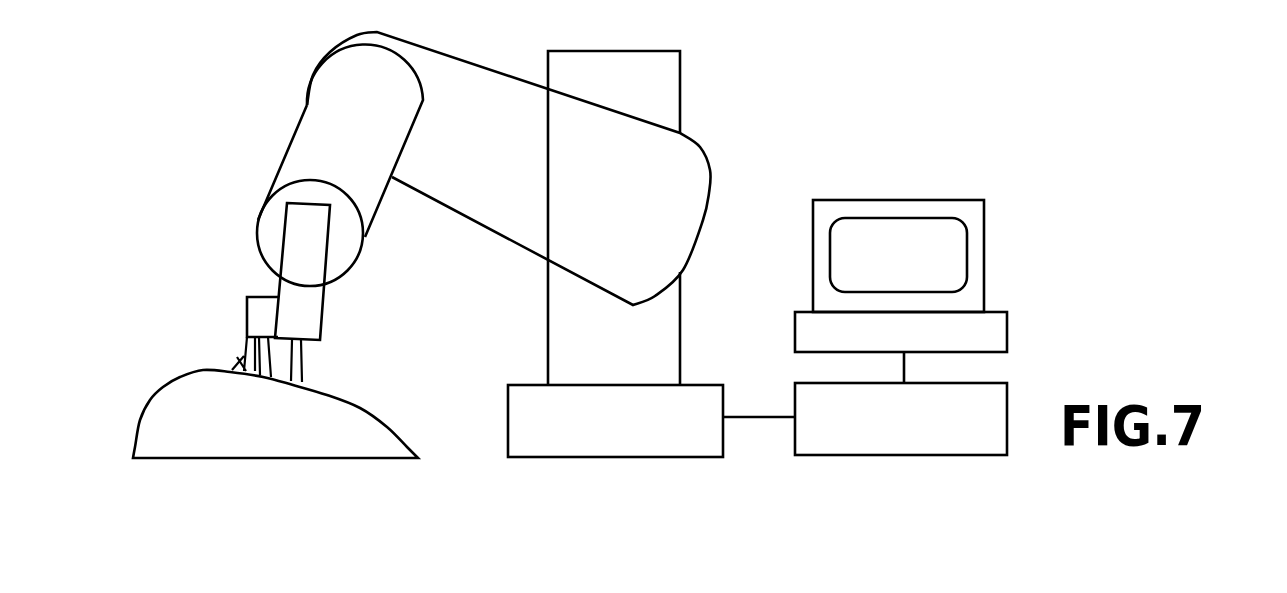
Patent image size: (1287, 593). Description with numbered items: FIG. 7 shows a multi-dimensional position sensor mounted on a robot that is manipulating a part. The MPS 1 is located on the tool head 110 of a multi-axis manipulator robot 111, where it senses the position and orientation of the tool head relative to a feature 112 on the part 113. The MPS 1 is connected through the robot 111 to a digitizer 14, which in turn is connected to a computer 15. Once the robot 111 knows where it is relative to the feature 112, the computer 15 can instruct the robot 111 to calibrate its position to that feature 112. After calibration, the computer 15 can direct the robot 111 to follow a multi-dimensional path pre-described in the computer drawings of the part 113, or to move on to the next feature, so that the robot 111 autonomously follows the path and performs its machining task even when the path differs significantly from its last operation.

The MPS 1 is at (247, 312).
The tool head 110 is at (307, 313).
The multi-axis manipulator robot 111 is at (632, 357).
The feature 112 is at (237, 367).
The part 113 is at (283, 428).
The digitizer 14 is at (795, 402).
The computer 15 is at (913, 200).